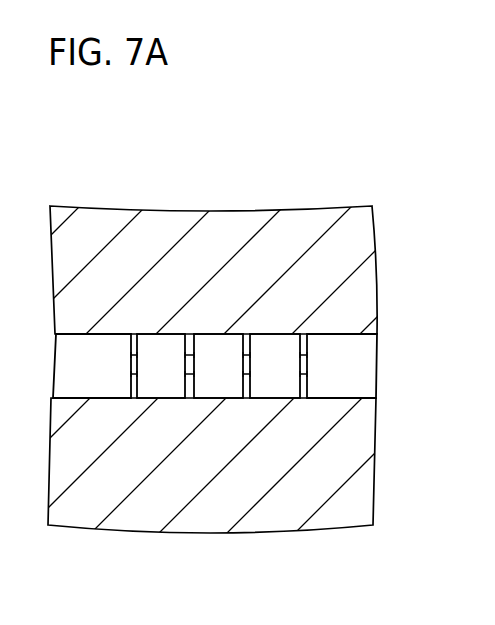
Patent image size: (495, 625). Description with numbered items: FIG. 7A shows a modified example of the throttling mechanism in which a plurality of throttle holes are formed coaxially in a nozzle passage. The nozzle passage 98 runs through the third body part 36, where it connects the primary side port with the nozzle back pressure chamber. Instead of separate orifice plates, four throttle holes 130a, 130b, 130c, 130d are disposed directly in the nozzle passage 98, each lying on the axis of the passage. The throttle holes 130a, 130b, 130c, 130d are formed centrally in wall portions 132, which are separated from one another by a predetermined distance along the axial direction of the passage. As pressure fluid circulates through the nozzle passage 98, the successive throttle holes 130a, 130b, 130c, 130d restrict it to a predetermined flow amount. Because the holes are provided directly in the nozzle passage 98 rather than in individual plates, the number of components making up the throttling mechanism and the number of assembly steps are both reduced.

The third body part 36 is at (383, 238).
The nozzle passage 98 is at (74, 366).
The throttle hole 130a is at (129, 367).
The throttle hole 130b is at (186, 366).
The throttle hole 130c is at (244, 366).
The throttle hole 130d is at (301, 366).
The wall portions 132 is at (134, 352).